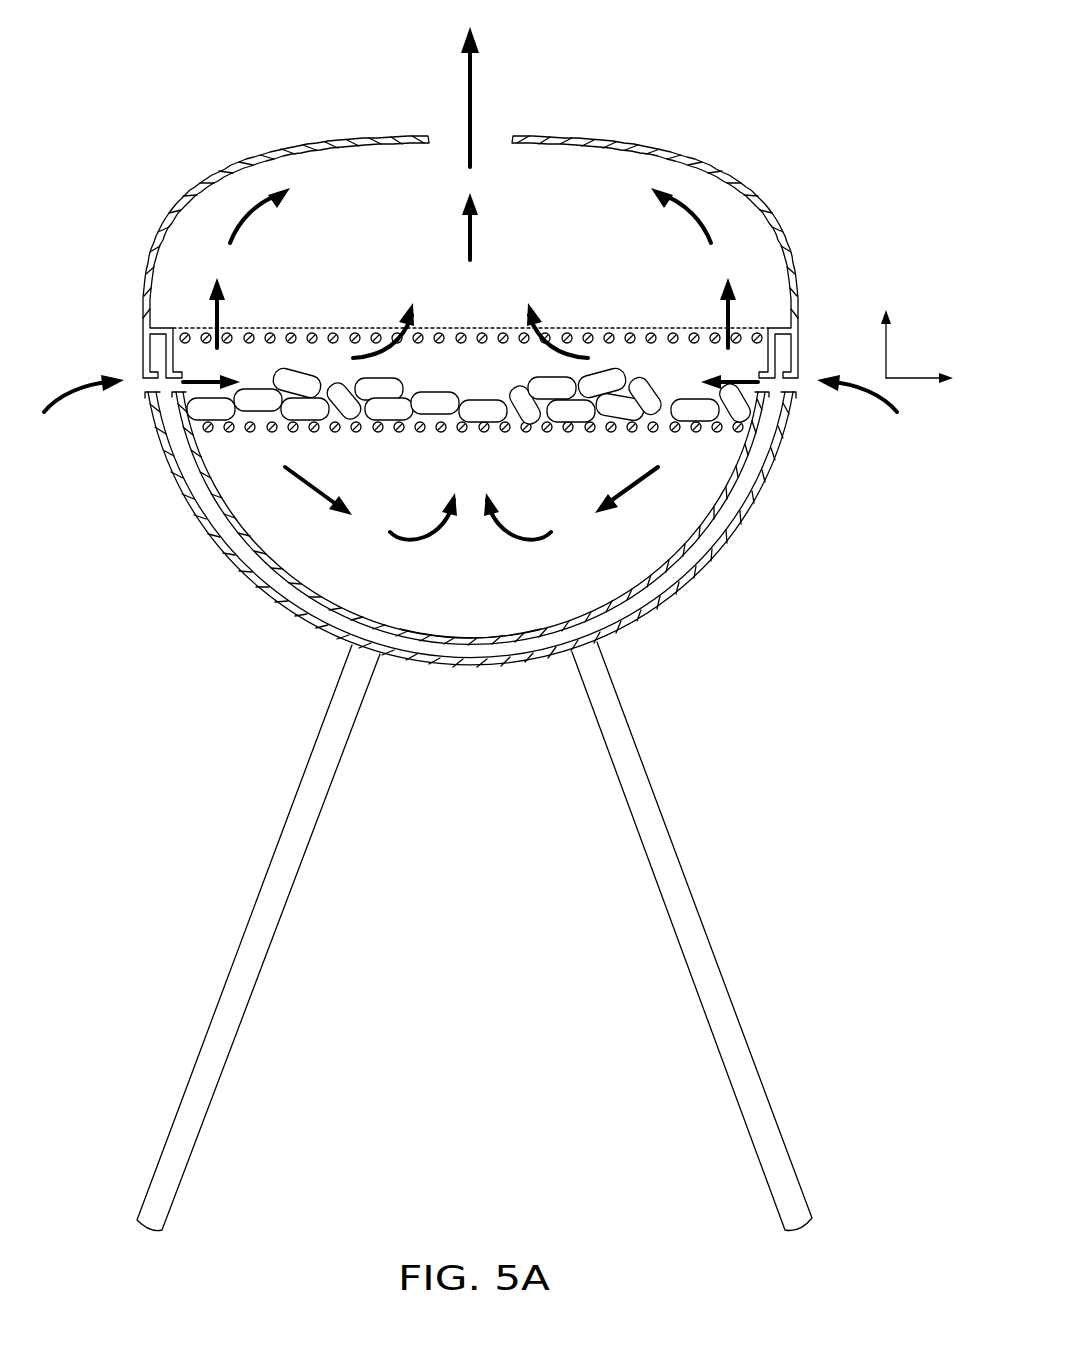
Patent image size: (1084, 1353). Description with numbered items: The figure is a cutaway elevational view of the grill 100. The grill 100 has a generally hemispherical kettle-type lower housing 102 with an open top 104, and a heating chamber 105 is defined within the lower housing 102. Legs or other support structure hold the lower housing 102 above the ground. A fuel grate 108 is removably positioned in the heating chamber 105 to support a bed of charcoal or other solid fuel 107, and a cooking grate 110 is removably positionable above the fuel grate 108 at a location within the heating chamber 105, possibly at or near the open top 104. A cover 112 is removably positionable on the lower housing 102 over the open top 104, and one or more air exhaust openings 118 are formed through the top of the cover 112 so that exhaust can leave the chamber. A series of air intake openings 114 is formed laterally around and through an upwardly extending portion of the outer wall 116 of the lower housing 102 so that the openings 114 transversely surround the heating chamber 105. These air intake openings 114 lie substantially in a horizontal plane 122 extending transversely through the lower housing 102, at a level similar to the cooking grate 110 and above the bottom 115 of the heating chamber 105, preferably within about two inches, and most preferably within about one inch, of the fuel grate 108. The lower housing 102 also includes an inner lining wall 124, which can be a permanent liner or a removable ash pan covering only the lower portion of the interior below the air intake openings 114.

The grill 100 is at (762, 67).
The lower housing 102 is at (202, 532).
The open top 104 is at (177, 262).
The heating chamber 105 is at (492, 383).
The solid fuel 107 is at (612, 352).
The fuel grate 108 is at (545, 428).
The cooking grate 110 is at (487, 328).
The cover 112 is at (642, 147).
The air intake openings 114 is at (134, 394).
The bottom 115 is at (473, 632).
The outer wall 116 is at (753, 517).
The air exhaust openings 118 is at (445, 122).
The horizontal plane 122 is at (917, 378).
The inner lining wall 124 is at (273, 563).